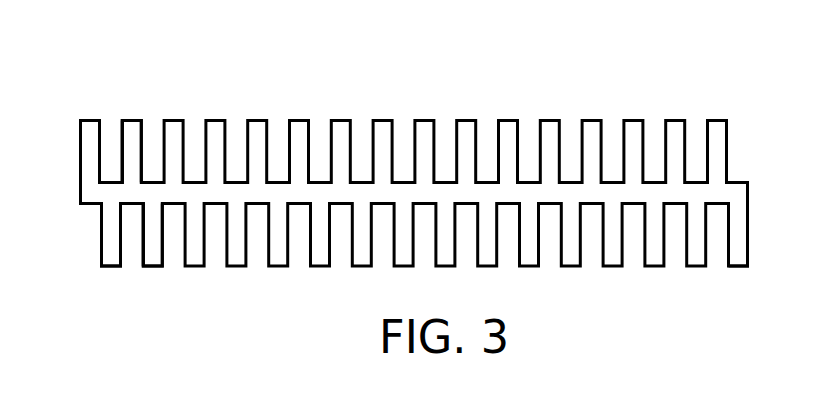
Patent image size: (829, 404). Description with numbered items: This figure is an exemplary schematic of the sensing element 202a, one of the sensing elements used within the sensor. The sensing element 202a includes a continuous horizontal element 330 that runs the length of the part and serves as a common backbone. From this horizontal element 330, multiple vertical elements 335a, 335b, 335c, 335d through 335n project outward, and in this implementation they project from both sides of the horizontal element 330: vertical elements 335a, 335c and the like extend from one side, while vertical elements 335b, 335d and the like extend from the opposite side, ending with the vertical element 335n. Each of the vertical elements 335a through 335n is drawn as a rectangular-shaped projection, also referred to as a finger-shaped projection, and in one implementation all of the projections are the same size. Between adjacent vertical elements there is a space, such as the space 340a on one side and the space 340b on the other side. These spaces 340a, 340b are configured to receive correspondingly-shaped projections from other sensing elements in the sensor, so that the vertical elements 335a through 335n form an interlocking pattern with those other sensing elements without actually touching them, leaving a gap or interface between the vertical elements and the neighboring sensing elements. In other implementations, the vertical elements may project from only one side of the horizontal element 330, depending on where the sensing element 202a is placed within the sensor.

The sensing element 202a is at (431, 91).
The continuous horizontal element 330 is at (108, 192).
The vertical element 335a is at (93, 128).
The vertical element 335b is at (108, 240).
The vertical element 335c is at (143, 130).
The vertical element 335d is at (152, 252).
The vertical element 335n is at (722, 135).
The space 340a is at (108, 150).
The space 340b is at (130, 224).